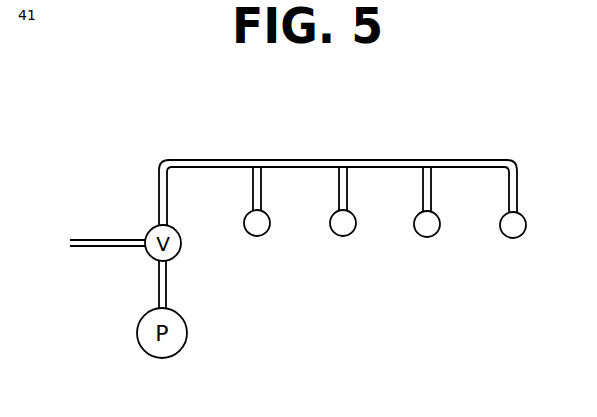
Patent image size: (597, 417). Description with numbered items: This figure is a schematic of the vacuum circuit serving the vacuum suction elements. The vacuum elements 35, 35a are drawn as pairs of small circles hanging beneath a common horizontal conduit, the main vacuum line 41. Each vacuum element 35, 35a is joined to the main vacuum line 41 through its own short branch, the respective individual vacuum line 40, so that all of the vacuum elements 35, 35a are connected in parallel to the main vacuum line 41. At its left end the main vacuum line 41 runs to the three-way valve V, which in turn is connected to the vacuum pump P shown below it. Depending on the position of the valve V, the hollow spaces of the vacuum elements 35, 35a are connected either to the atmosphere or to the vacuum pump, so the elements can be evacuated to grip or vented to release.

The vacuum element 35 is at (334, 232).
The vacuum element 35a is at (504, 234).
The individual vacuum line 40 is at (253, 190).
The main vacuum line 41 is at (318, 160).